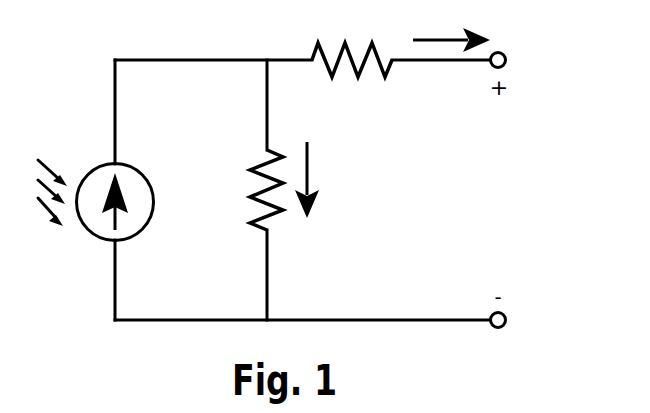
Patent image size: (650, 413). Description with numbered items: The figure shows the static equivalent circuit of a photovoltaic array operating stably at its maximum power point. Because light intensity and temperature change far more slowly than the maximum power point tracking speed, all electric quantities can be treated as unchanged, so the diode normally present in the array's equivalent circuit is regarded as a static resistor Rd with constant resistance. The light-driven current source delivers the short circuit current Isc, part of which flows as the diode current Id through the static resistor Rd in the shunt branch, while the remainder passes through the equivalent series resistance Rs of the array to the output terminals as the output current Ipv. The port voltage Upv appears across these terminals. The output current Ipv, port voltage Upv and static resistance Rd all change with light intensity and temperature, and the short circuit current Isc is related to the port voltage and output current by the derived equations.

The short circuit current Isc is at (139, 105).
The static resistor Rd is at (246, 190).
The diode current Id is at (326, 180).
The equivalent series resistance Rs is at (352, 42).
The output current Ipv is at (451, 26).
The port voltage Upv is at (505, 193).